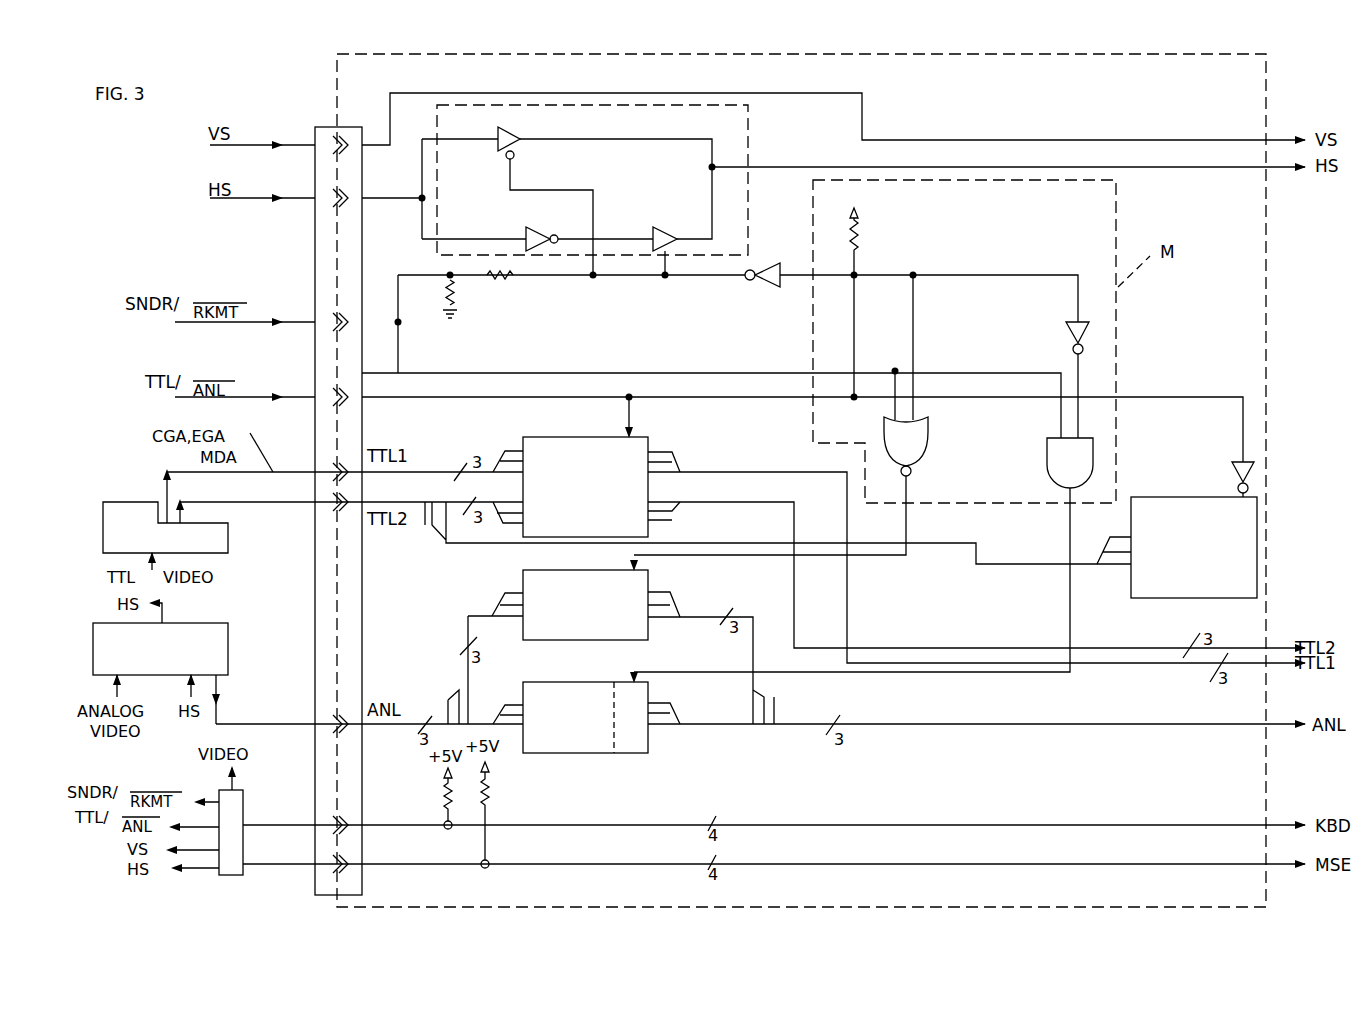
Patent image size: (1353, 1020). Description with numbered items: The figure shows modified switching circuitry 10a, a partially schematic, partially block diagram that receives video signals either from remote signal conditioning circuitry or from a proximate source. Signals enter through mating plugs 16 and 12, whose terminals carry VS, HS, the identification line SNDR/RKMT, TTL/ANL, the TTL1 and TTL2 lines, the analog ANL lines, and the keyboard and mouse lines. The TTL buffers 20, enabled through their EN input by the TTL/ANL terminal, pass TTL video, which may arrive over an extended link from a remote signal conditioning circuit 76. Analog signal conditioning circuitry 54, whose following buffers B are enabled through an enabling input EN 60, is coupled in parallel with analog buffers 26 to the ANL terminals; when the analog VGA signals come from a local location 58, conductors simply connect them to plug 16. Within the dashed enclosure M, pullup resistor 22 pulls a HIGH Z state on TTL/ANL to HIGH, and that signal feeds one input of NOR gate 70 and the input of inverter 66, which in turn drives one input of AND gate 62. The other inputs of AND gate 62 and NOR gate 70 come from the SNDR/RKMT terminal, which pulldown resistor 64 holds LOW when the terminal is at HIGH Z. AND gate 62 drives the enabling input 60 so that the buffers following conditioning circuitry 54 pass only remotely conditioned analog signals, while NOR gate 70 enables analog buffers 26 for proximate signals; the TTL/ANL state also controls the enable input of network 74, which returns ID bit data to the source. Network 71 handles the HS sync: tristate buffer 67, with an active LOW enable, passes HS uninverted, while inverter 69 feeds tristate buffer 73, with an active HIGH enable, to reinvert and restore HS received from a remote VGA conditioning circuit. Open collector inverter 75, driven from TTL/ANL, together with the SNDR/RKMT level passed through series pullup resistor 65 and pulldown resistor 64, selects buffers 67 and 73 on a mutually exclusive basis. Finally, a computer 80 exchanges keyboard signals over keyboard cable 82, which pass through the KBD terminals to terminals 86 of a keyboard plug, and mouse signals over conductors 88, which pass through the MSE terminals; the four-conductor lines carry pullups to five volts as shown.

The modified switching circuitry 10a is at (1213, 106).
The plug 12 is at (358, 127).
The plug 16 is at (317, 127).
The TTL buffers 20 is at (588, 434).
The pullup resistor 22 is at (860, 243).
The analog buffers 26 is at (649, 632).
The analog signal conditioning circuitry 54 is at (575, 680).
The local location 58 is at (178, 623).
The enable input 60 is at (632, 679).
The AND gate 62 is at (861, 560).
The pulldown resistor 64 is at (455, 297).
The series pullup resistor 65 is at (507, 279).
The inverter 66 is at (1068, 330).
The tristate buffer 67 is at (518, 137).
The inverter 69 is at (540, 233).
The NOR gate 70 is at (779, 494).
The network 71 is at (590, 188).
The tristate buffer 73 is at (668, 233).
The network 74 is at (1181, 496).
The open collector inverter 75 is at (771, 263).
The remote signal conditioning circuit 76 is at (103, 502).
The computer 80 is at (218, 877).
The keyboard cable 82 is at (308, 823).
The terminals 86 is at (302, 865).
The conductors 88 is at (262, 875).